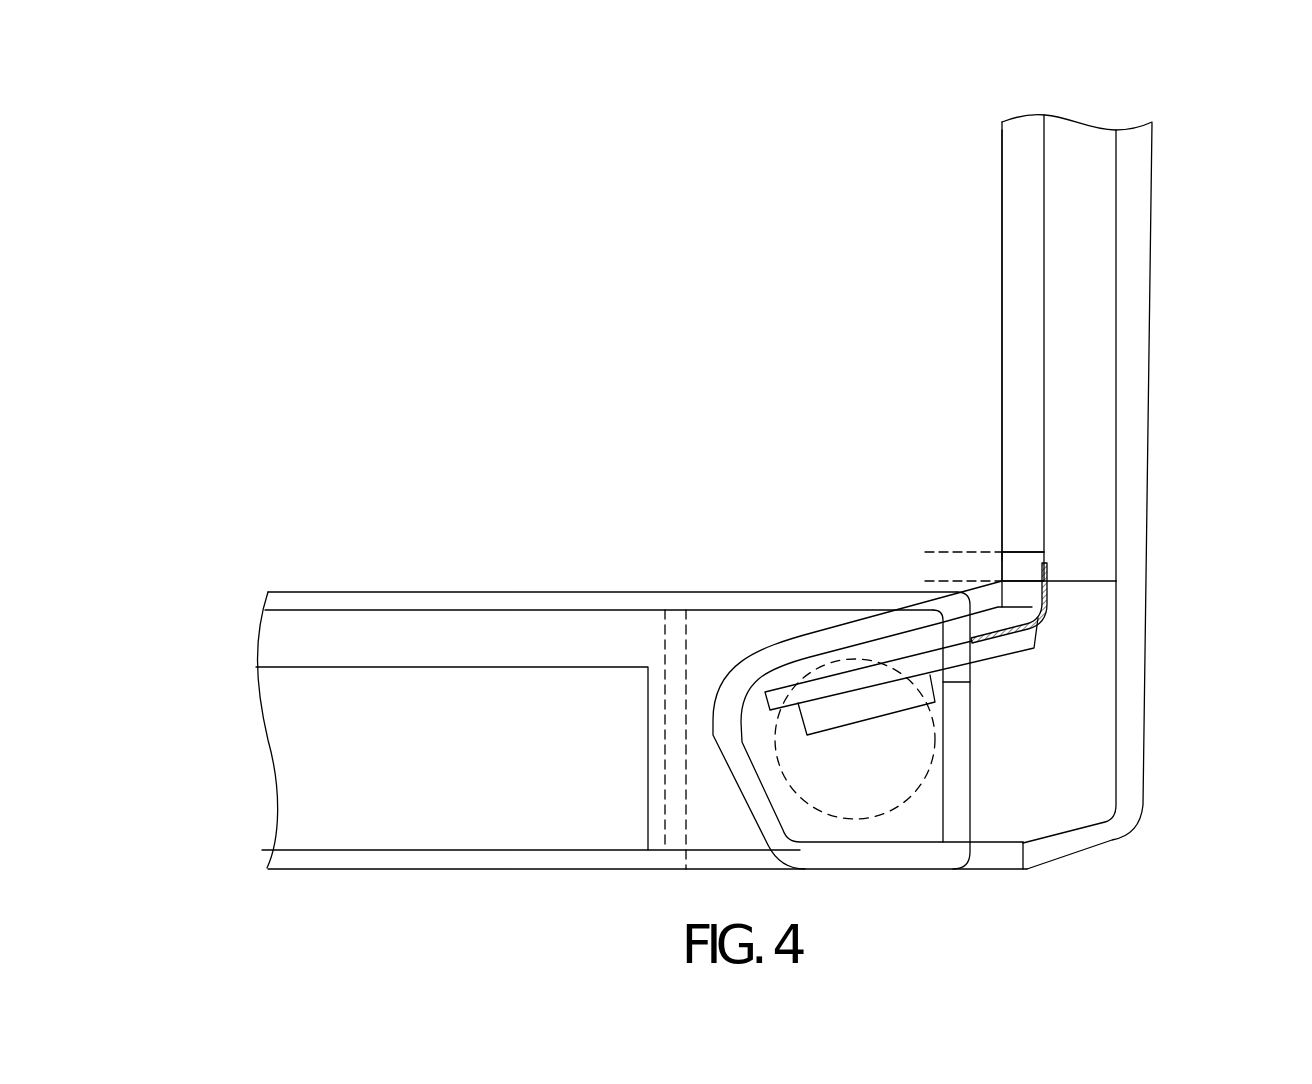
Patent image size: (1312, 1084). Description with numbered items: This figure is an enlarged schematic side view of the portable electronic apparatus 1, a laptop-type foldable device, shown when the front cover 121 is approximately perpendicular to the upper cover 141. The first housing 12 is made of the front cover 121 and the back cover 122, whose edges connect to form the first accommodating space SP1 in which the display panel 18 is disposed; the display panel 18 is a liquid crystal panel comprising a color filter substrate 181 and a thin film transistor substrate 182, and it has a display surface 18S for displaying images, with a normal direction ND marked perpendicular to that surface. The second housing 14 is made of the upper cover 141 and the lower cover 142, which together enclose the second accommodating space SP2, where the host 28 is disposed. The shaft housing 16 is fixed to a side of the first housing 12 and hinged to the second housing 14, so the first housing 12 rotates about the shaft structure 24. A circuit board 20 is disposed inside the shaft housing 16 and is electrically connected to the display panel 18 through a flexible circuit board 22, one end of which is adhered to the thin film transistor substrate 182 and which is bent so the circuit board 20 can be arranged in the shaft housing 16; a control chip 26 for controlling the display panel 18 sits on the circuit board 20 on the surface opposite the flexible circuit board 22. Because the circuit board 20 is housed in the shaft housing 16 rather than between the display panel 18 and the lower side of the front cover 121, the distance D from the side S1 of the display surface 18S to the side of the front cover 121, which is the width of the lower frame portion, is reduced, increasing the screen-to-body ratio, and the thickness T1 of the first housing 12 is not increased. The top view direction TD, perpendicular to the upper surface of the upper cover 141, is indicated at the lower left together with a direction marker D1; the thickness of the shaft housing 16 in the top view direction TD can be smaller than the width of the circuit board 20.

The portable electronic apparatus 1 is at (1226, 118).
The first housing 12 is at (1139, 496).
The front cover 121 is at (1015, 563).
The back cover 122 is at (1132, 474).
The second housing 14 is at (643, 669).
The upper cover 141 is at (384, 603).
The lower cover 142 is at (316, 860).
The shaft housing 16 is at (728, 712).
The display panel 18 is at (1097, 361).
The color filter substrate 181 is at (1025, 216).
The thin film transistor substrate 182 is at (1095, 294).
The display surface 18S is at (1002, 218).
The circuit board 20 is at (993, 650).
The flexible circuit board 22 is at (1040, 621).
The shaft structure 24 is at (827, 815).
The control chip 26 is at (877, 705).
The host 28 is at (448, 774).
The first accommodating space SP1 is at (1083, 589).
The second accommodating space SP2 is at (474, 646).
The side of the display surface S1 is at (1002, 552).
The distance D is at (913, 552).
The thickness of the first housing T1 is at (1002, 105).
The normal direction ND is at (1000, 337).
The first direction D1 is at (116, 825).
The top view direction TD is at (123, 850).